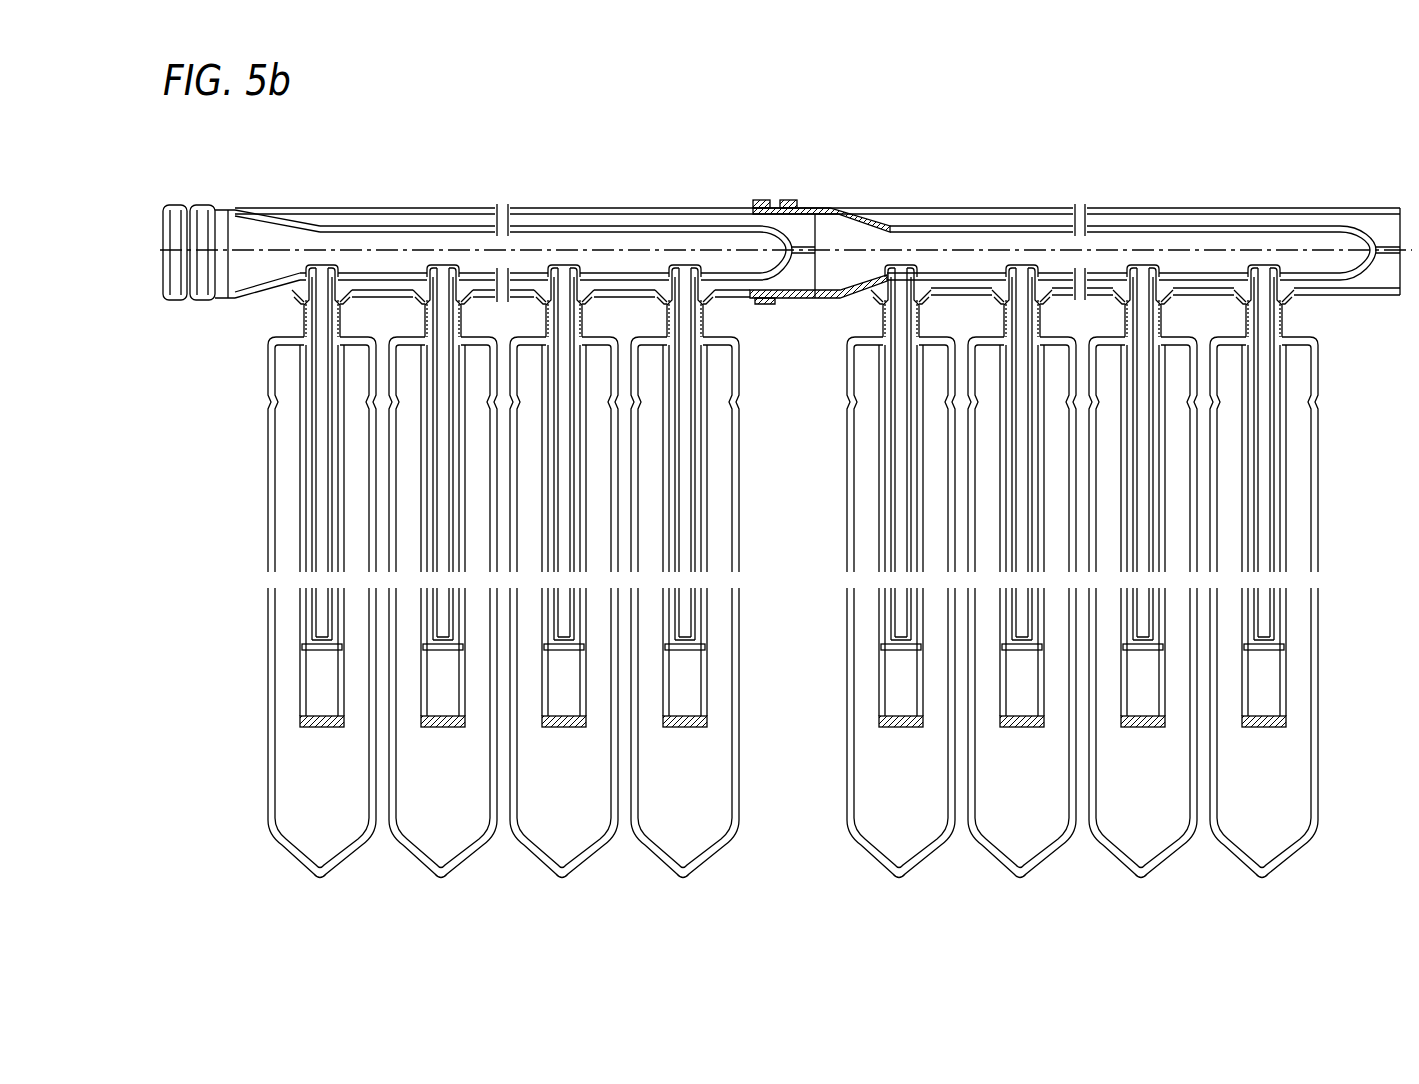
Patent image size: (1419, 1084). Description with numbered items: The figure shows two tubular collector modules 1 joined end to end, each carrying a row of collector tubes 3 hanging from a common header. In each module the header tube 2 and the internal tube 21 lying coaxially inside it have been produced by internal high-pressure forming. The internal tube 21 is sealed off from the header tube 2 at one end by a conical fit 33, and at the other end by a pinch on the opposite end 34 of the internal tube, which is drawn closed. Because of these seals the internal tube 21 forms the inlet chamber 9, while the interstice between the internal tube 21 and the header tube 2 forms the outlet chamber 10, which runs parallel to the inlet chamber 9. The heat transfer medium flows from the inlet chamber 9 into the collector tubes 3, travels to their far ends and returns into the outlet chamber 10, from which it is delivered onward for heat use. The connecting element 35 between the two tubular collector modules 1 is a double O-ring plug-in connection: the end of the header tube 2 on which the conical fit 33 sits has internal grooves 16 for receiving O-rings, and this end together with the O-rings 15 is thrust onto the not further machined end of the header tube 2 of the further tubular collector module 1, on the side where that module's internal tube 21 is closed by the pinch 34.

The tubular collector module 1 is at (757, 252).
The header tube 2 is at (403, 212).
The collector tubes 3 is at (290, 866).
The inlet chamber 9 is at (372, 264).
The outlet chamber 10 is at (393, 284).
The O-rings 15 is at (788, 200).
The internal grooves 16 is at (178, 222).
The internal tube 21 is at (590, 228).
The conical fit 33 is at (296, 211).
The pinch on the opposite end 34 is at (786, 298).
The connecting element 35 is at (828, 321).